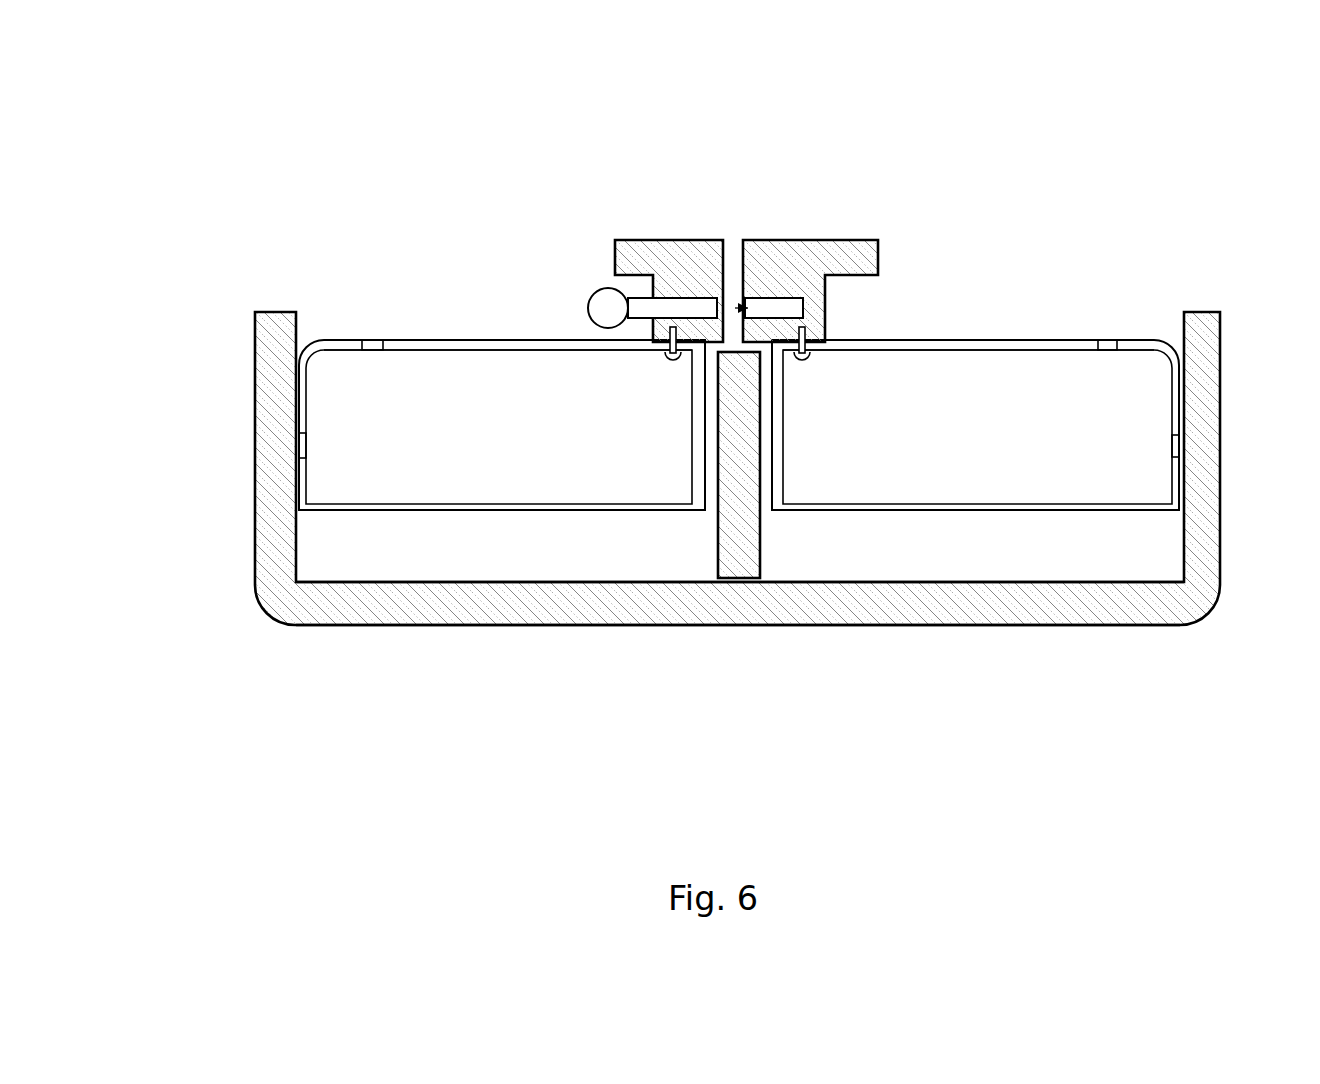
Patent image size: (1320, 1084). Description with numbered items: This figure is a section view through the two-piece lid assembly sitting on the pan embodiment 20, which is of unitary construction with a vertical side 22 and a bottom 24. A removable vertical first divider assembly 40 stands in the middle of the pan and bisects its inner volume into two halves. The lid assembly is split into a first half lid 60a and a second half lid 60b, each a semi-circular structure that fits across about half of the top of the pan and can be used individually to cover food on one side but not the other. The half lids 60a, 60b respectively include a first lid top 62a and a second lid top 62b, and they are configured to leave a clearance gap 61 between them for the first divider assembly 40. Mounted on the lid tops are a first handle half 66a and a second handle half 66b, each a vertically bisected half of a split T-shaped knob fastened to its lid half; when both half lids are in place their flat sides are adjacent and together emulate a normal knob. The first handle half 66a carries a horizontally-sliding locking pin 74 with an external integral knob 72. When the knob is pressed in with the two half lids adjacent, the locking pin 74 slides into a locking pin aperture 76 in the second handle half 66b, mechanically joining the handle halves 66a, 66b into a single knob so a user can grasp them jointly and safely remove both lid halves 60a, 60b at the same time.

The pan embodiment 20 is at (704, 429).
The vertical side 22 is at (270, 543).
The bottom 24 is at (440, 583).
The first divider assembly 40 is at (714, 532).
The first half lid 60a is at (429, 321).
The second half lid 60b is at (1022, 331).
The clearance gap 61 is at (741, 345).
The first lid top 62a is at (537, 348).
The second lid top 62b is at (915, 340).
The first handle half 66a is at (635, 266).
The second handle half 66b is at (846, 242).
The external integral knob 72 is at (598, 297).
The locking pin 74 is at (662, 306).
The locking pin aperture 76 is at (790, 305).